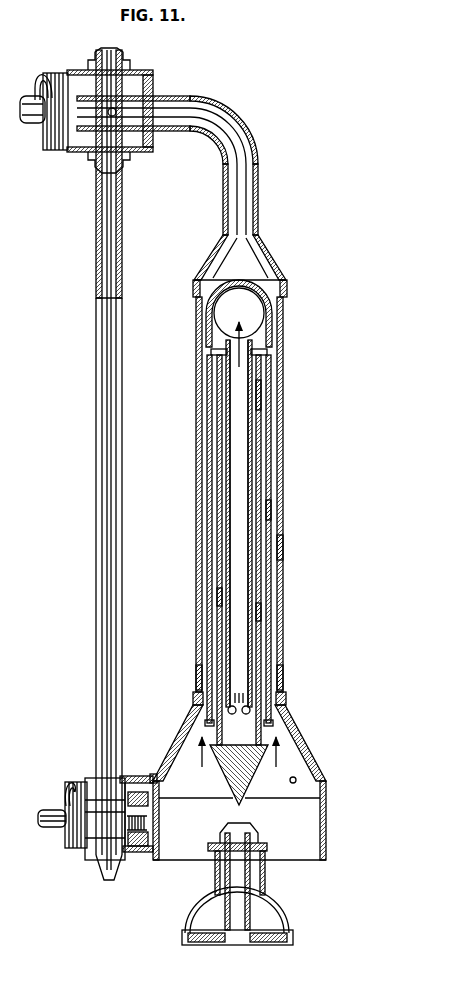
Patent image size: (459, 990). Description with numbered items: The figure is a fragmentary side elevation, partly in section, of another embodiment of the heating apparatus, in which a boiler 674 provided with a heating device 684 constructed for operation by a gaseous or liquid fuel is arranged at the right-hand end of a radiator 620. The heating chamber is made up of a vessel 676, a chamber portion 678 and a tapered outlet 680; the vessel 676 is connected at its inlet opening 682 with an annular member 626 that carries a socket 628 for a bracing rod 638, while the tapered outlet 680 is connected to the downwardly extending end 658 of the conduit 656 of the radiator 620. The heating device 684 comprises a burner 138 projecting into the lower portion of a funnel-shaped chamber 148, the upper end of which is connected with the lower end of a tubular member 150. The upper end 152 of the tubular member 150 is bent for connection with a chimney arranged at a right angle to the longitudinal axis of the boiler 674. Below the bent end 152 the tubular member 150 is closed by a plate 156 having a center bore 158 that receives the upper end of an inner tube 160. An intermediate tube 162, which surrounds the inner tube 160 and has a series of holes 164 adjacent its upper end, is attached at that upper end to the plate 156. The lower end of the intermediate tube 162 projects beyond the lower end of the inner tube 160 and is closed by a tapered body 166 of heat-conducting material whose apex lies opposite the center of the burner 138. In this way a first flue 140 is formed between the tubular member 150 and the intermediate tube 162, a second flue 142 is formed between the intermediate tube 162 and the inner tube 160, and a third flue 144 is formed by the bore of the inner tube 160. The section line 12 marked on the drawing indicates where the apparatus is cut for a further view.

The section line 12 is at (242, 100).
The burner 138 is at (265, 873).
The first flue 140 is at (270, 642).
The second flue 142 is at (222, 597).
The third flue 144 is at (240, 478).
The funnel-shaped chamber 148 is at (296, 782).
The tubular member 150 is at (272, 677).
The upper end of tubular member 152 is at (226, 288).
The plate 156 is at (211, 349).
The center bore 158 is at (273, 338).
The inner tube 160 is at (252, 418).
The intermediate tube 162 is at (261, 397).
The holes 164 is at (262, 365).
The body of heat-conducting material 166 is at (263, 758).
The radiator 620 is at (94, 226).
The annular member 626 is at (140, 853).
The socket 628 is at (148, 828).
The bracing rod 638 is at (50, 827).
The conduit 656 is at (137, 72).
The downwardly extending end of conduit 658 is at (246, 202).
The boiler 674 is at (286, 438).
The vessel of heating chamber 676 is at (303, 737).
The heating chamber portion 678 is at (283, 547).
The tapered outlet 680 is at (268, 262).
The inlet opening 682 is at (155, 775).
The heating device 684 is at (272, 509).